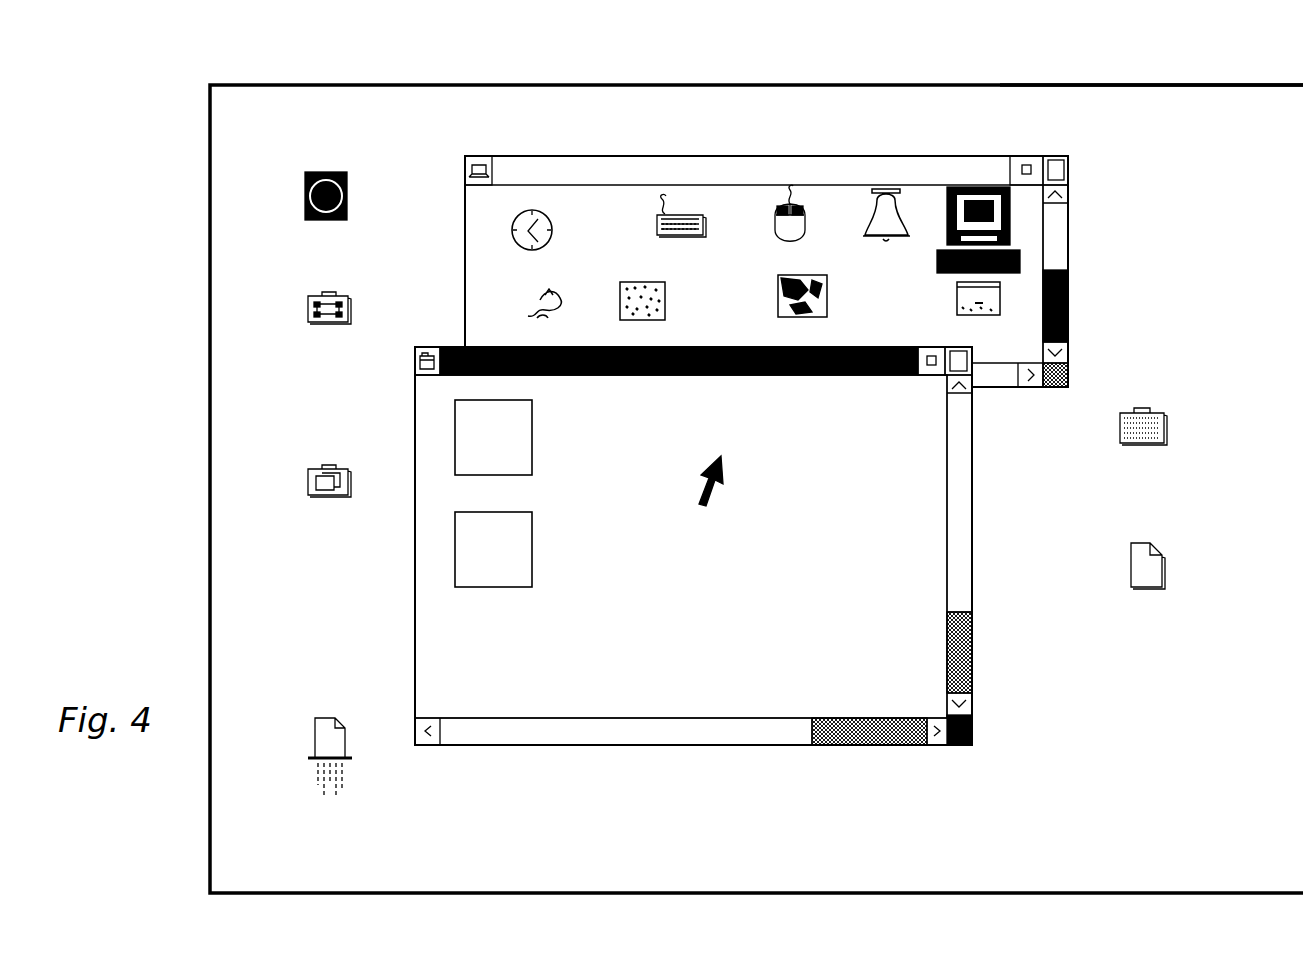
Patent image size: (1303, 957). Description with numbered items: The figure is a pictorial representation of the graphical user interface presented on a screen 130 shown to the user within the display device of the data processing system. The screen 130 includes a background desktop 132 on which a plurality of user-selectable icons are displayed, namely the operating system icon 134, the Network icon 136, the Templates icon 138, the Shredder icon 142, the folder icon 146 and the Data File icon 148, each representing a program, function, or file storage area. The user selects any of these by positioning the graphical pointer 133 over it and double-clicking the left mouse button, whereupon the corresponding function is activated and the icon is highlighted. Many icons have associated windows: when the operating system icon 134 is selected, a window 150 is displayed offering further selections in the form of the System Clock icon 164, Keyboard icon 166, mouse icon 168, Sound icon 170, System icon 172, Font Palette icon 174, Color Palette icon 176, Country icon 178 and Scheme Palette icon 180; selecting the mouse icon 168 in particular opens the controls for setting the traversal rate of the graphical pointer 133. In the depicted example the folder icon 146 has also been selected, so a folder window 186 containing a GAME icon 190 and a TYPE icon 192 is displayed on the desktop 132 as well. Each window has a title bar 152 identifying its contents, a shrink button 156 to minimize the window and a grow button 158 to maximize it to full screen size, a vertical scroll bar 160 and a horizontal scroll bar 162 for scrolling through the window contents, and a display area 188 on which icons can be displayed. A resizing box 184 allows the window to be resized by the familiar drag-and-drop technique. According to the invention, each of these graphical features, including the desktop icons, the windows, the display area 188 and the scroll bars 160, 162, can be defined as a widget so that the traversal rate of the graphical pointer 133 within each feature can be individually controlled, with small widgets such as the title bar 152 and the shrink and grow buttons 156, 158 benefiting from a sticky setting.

The screen 130 is at (300, 86).
The background desktop 132 is at (1217, 98).
The graphical pointer 133 is at (722, 478).
The OS/2 System icon 134 is at (305, 181).
The user-selectable icon 136 is at (308, 303).
The user-selectable icon 138 is at (308, 481).
The user-selectable icon 142 is at (312, 736).
The folder icon 146 is at (1168, 435).
The user-selectable icon 148 is at (1165, 563).
The window 150 is at (573, 156).
The title bar 152 is at (820, 166).
The shrink button 156 is at (1025, 157).
The grow button 158 is at (1052, 153).
The vertical scroll bar 160 is at (958, 538).
The horizontal scroll bar 162 is at (597, 728).
The icon 164 is at (552, 221).
The icon 166 is at (688, 212).
The mouse icon 168 is at (845, 212).
The icon 170 is at (898, 210).
The icon 172 is at (1010, 212).
The icon 174 is at (556, 300).
The icon 176 is at (667, 300).
The icon 178 is at (778, 292).
The icon 180 is at (957, 294).
The resizing box 184 is at (1070, 372).
The folder window 186 is at (415, 427).
The display area 188 is at (450, 657).
The GAME icon 190 is at (533, 455).
The TYPE icon 192 is at (533, 565).